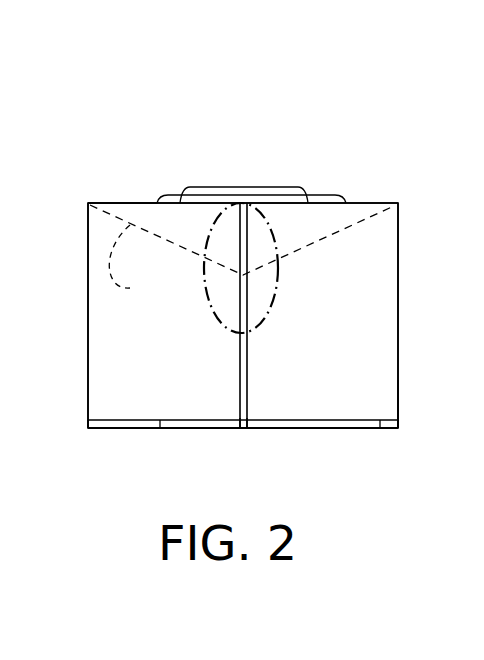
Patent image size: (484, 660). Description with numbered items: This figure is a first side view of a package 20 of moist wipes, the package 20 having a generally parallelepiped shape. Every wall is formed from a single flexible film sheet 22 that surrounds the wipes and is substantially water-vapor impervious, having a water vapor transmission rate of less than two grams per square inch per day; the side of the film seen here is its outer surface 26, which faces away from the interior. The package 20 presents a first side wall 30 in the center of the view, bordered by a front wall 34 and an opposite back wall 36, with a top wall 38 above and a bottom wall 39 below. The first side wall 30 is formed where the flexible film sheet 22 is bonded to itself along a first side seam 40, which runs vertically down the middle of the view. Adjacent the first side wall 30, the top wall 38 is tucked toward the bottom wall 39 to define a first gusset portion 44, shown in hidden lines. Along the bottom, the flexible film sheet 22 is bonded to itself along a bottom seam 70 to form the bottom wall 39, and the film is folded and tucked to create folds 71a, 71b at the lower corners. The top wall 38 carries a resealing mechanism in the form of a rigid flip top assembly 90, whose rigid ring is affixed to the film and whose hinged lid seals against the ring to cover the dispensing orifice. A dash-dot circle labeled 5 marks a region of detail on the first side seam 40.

The package 20 is at (373, 140).
The rigid flip top assembly 90 is at (175, 195).
The top wall 38 is at (128, 203).
The flexible film sheet 22 is at (385, 245).
The front wall 34 is at (398, 290).
The outer surface 26 is at (385, 390).
The back wall 36 is at (88, 297).
The first side wall 30 is at (102, 390).
The first side seam 40 is at (238, 390).
The first gusset portion 44 is at (142, 264).
The detail region 5 is at (277, 278).
The bottom seam 70 is at (243, 428).
The bottom wall 39 is at (320, 428).
The fold 71a is at (387, 428).
The fold 71b is at (148, 428).